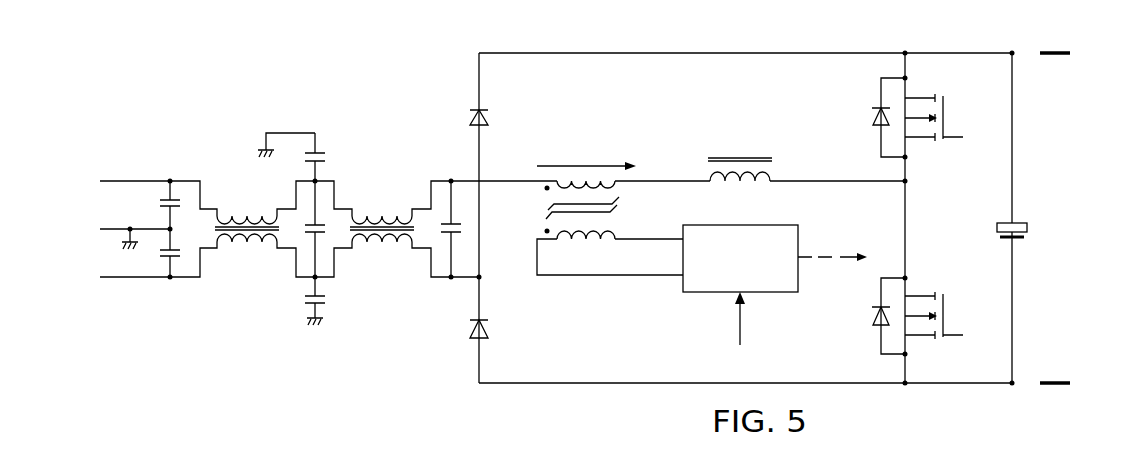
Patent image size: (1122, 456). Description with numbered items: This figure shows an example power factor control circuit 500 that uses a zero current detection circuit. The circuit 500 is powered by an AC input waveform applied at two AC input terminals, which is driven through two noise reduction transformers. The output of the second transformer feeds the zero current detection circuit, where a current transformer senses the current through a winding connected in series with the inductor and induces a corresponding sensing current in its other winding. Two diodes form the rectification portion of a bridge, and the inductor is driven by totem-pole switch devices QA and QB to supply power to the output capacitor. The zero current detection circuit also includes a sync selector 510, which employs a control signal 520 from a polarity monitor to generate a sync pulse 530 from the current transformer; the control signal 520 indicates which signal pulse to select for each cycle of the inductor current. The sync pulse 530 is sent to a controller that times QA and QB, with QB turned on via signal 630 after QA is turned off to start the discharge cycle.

The power factor control circuit 500 is at (164, 107).
The sync selector 510 is at (713, 293).
The control signal 520 is at (742, 318).
The sync pulse 530 is at (823, 258).
The signal 630 is at (147, 455).